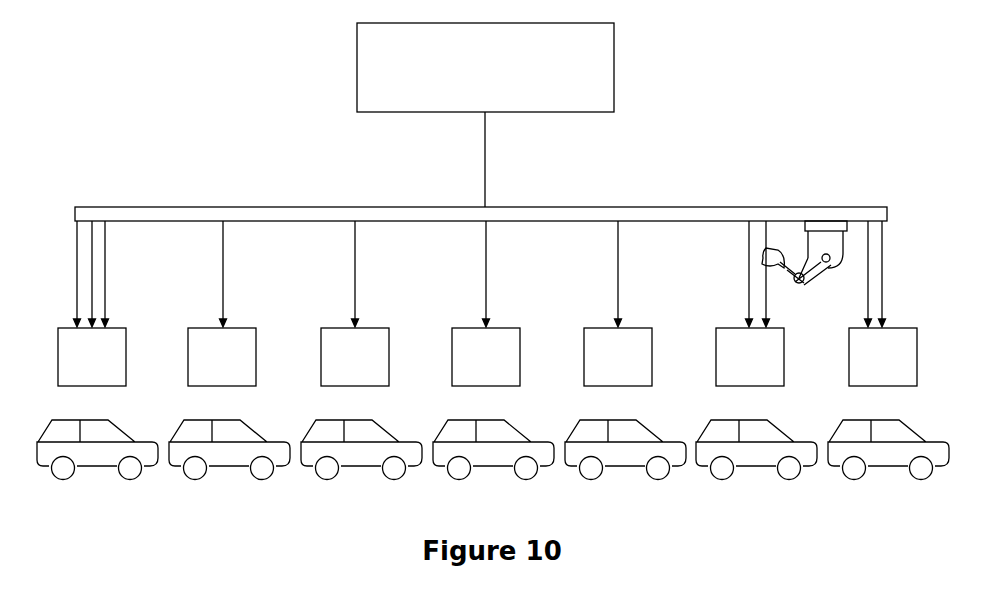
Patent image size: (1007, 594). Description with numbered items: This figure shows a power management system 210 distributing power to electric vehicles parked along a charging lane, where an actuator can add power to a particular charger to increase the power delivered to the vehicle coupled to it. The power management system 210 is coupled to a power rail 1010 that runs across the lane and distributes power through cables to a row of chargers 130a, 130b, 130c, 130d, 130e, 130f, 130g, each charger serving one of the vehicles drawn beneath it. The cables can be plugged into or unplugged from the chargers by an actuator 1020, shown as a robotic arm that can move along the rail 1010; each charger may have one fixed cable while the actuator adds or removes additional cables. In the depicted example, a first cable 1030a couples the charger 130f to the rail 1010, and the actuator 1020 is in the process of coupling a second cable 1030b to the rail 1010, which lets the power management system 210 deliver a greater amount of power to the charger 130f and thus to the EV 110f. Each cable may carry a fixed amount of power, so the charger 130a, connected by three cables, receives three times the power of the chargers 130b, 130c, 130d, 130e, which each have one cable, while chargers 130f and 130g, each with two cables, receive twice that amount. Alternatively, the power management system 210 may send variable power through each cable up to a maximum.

The power management system 210 is at (485, 67).
The power rail 1010 is at (717, 207).
The actuator 1020 is at (815, 222).
The first cable 1030a is at (748, 293).
The second cable 1030b is at (766, 293).
The charger 130a is at (92, 357).
The charger 130b is at (222, 357).
The charger 130c is at (355, 357).
The charger 130d is at (486, 357).
The charger 130e is at (618, 357).
The charger 130f is at (750, 357).
The charger 130g is at (883, 357).
The EV 110f is at (752, 477).